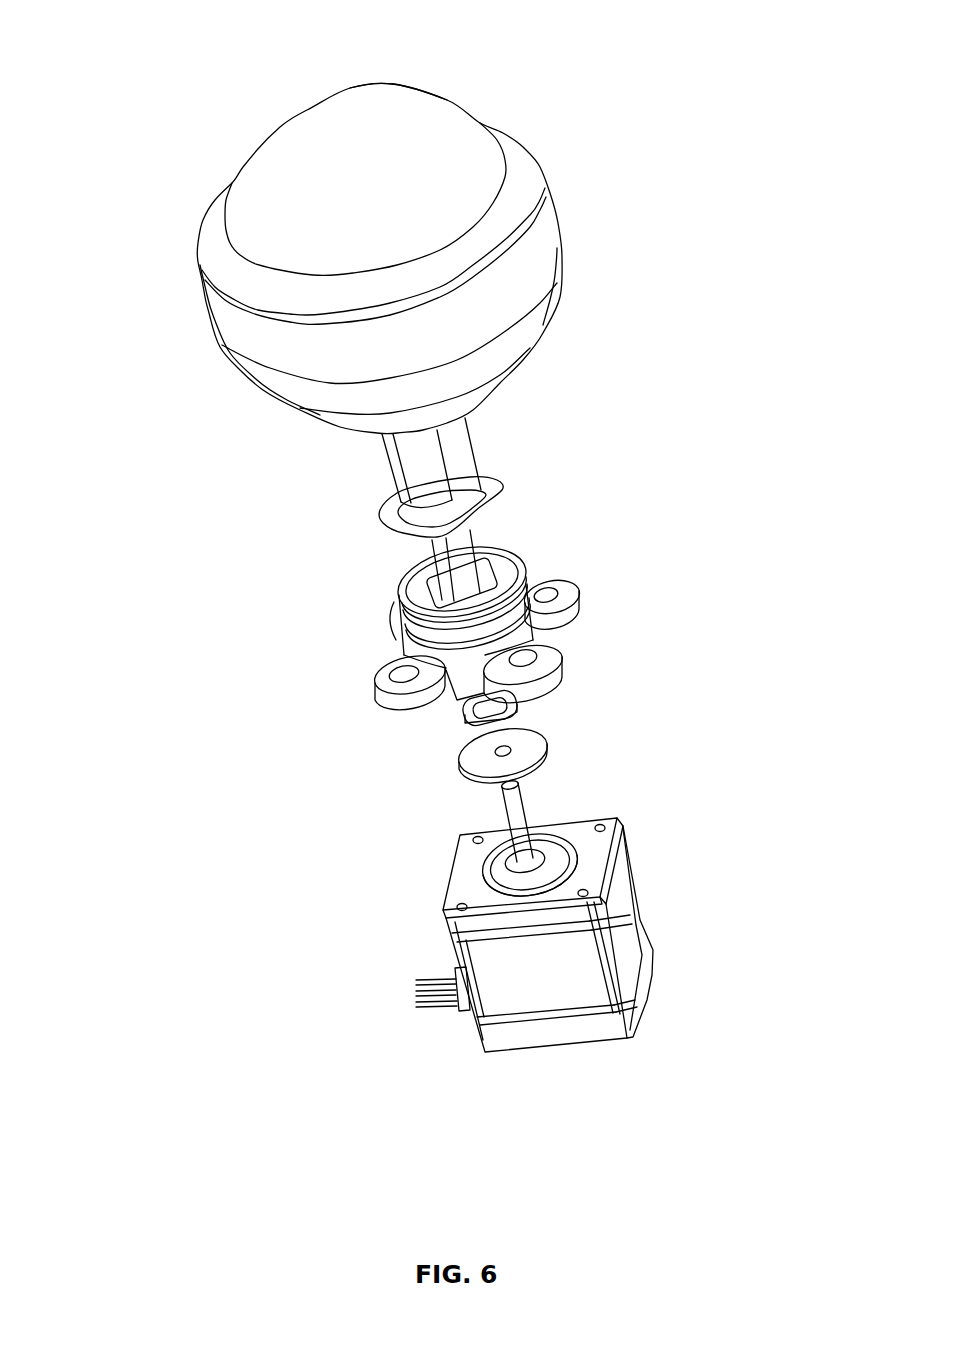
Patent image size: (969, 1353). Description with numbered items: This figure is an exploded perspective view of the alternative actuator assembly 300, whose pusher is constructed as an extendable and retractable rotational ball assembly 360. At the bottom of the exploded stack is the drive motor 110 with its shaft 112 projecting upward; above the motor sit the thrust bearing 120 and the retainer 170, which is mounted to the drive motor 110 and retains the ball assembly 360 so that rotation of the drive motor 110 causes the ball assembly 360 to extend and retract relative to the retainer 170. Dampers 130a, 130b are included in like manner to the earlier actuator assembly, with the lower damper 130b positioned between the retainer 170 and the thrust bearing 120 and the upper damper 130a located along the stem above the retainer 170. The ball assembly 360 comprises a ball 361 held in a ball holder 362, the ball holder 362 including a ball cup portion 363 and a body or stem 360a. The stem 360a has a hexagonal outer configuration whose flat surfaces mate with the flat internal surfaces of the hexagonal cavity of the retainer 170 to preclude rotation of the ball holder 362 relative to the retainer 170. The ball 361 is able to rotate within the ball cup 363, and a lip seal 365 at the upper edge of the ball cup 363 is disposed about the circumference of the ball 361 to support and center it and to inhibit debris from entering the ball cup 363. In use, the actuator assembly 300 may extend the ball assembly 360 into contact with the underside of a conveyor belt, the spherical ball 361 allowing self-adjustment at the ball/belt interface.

The actuator assembly 300 is at (120, 100).
The drive motor 110 is at (640, 901).
The motor shaft 112 is at (530, 813).
The thrust bearing 120 is at (545, 737).
The damper 130a is at (502, 488).
The damper 130b is at (462, 715).
The retainer 170 is at (388, 625).
The rotational ball assembly 360 is at (205, 317).
The stem 360a is at (470, 440).
The ball 361 is at (390, 83).
The ball holder 362 is at (563, 249).
The ball cup portion 363 is at (255, 387).
The lip seal 365 is at (518, 175).